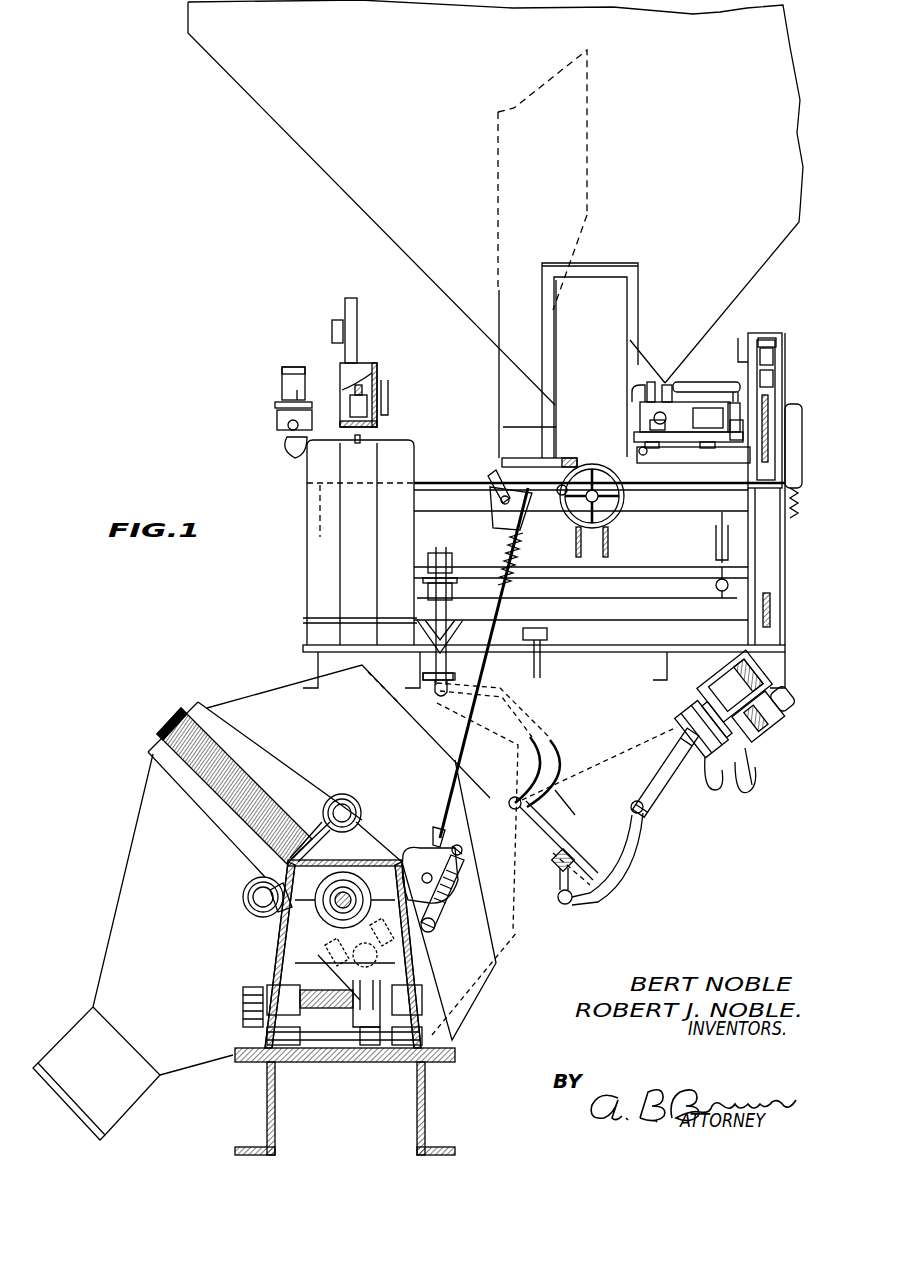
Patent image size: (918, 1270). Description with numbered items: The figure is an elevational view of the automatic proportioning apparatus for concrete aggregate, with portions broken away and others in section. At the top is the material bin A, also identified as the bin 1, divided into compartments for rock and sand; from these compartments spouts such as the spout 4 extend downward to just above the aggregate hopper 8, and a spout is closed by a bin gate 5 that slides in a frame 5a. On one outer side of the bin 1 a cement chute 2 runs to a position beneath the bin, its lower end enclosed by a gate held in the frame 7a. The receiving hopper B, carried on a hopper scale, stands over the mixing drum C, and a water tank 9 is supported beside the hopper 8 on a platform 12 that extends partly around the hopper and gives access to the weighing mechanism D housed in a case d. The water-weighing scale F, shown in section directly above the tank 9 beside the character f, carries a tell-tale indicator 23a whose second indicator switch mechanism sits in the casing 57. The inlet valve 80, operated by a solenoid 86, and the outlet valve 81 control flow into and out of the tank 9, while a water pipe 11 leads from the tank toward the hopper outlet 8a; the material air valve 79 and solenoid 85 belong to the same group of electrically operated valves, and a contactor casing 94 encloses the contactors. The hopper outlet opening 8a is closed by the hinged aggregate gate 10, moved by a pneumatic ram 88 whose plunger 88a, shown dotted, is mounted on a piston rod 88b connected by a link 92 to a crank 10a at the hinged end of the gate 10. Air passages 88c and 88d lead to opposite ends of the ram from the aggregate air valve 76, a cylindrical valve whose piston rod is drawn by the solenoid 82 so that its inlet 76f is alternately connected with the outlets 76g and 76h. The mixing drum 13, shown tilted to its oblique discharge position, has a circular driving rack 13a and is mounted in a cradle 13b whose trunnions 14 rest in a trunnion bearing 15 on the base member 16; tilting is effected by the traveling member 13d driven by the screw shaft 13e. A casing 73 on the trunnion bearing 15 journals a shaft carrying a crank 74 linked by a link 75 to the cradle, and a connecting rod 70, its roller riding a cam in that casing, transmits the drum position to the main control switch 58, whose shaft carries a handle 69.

The material bin 1 is at (335, 160).
The material bin A is at (398, 180).
The cement chute 2 is at (592, 132).
The spout 4 is at (608, 300).
The frame 7a is at (518, 462).
The material air valve 79 is at (677, 405).
The solenoid 85 is at (697, 400).
The frame 5a is at (578, 460).
The weighing mechanism D is at (757, 340).
The case d is at (770, 345).
The contactor casing 94 is at (794, 404).
The platform 12 is at (315, 650).
The water tank 9 is at (315, 508).
The receiving hopper B is at (430, 548).
The aggregate hopper 8 is at (430, 525).
The water-weighing scale F is at (372, 375).
The valve f is at (372, 380).
The tell-tale indicator 23a is at (376, 326).
The casing 57 is at (332, 333).
The solenoid 86 is at (293, 384).
The water inlet valve 80 is at (277, 425).
The bin gate 5 is at (625, 485).
The handle 69 is at (497, 470).
The main control switch 58 is at (500, 505).
The connecting rod 70 is at (500, 600).
The water outlet valve 81 is at (455, 605).
The water pipe 11 is at (440, 690).
The mixing drum C is at (237, 710).
The cradle 13b is at (483, 960).
The outlet opening 8a is at (560, 802).
The aggregate gate 10 is at (548, 898).
The crank 10a is at (590, 905).
The link 92 is at (626, 853).
The air passage 88c is at (725, 700).
The plunger 88a is at (688, 717).
The pneumatic ram 88 is at (772, 690).
The solenoid 82 is at (775, 724).
The piston rod 88b is at (705, 760).
The air passage 88d is at (727, 762).
The aggregate air valve 76 is at (745, 750).
The inlet 76f is at (750, 790).
The outlet 76g is at (758, 790).
The outlet 76h is at (765, 833).
The casing 73 is at (410, 852).
The crank 74 is at (455, 858).
The link 75 is at (449, 890).
The circular driving rack 13a is at (242, 785).
The mixing drum 13 is at (172, 812).
The trunnion bearing 15 is at (328, 917).
The trunnions 14 is at (335, 900).
The screw shaft 13e is at (317, 1020).
The traveling member 13d is at (370, 1000).
The base member 16 is at (420, 1085).